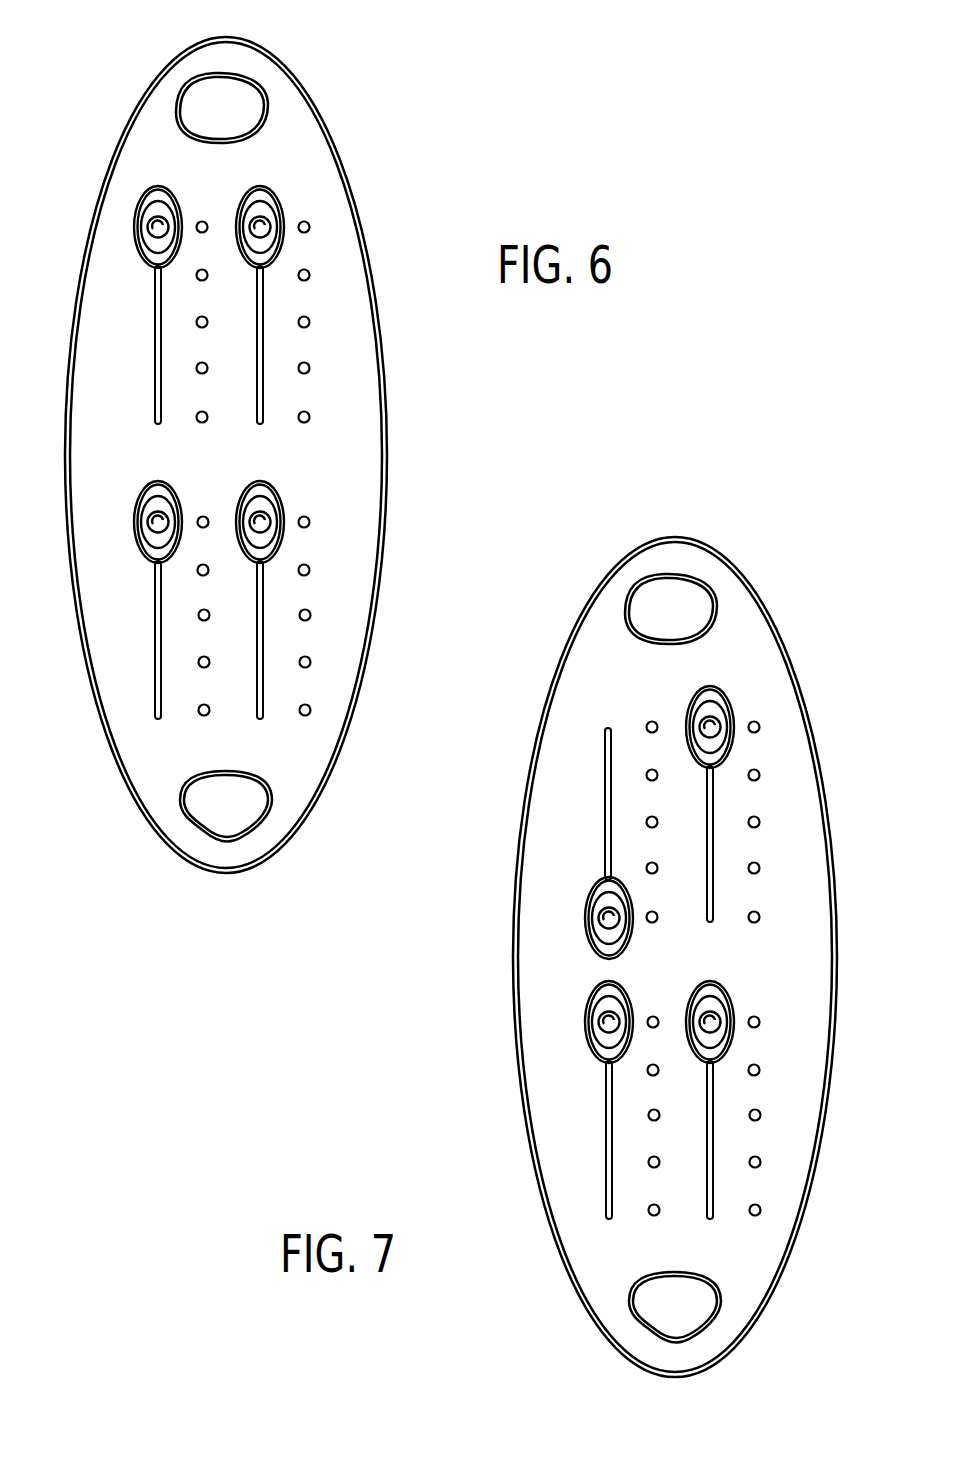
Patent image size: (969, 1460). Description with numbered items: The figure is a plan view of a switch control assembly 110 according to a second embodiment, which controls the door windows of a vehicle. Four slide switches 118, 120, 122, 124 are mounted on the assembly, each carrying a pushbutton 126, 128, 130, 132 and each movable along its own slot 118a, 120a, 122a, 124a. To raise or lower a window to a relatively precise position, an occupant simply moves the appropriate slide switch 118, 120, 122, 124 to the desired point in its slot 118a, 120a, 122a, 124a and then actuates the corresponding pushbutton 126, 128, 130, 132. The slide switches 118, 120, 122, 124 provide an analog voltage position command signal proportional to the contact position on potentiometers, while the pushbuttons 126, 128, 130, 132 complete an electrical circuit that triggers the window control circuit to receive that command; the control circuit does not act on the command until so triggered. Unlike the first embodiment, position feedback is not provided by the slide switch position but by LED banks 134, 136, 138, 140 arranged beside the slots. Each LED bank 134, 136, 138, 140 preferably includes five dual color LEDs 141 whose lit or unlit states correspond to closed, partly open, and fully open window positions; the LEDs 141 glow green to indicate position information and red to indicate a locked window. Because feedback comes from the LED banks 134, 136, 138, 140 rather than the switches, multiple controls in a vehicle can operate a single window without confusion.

In FIG. 6, the switch control assembly 110 is at (300, 56).
In FIG. 7, the switch control assembly 110 is at (750, 558).
In FIG. 6, the slide switch 118 is at (103, 243).
In FIG. 7, the slide switch 118 is at (549, 932).
In FIG. 6, the slot 118a is at (156, 347).
In FIG. 7, the slot 118a is at (606, 802).
In FIG. 6, the slide switch 120 is at (292, 214).
In FIG. 7, the slide switch 120 is at (744, 714).
In FIG. 6, the slot 120a is at (265, 385).
In FIG. 7, the slot 120a is at (715, 884).
In FIG. 6, the slide switch 122 is at (100, 551).
In FIG. 7, the slide switch 122 is at (550, 1052).
In FIG. 6, the slot 122a is at (158, 645).
In FIG. 7, the slot 122a is at (608, 1145).
In FIG. 6, the slide switch 124 is at (300, 525).
In FIG. 7, the slide switch 124 is at (751, 1027).
In FIG. 6, the slot 124a is at (265, 640).
In FIG. 7, the slot 124a is at (715, 1140).
In FIG. 6, the pushbutton 126 is at (158, 227).
In FIG. 7, the pushbutton 126 is at (594, 934).
In FIG. 6, the pushbutton 128 is at (260, 227).
In FIG. 7, the pushbutton 128 is at (710, 727).
In FIG. 6, the pushbutton 130 is at (158, 522).
In FIG. 7, the pushbutton 130 is at (609, 1022).
In FIG. 6, the pushbutton 132 is at (260, 522).
In FIG. 7, the pushbutton 132 is at (710, 1022).
In FIG. 6, the LED bank 134 is at (196, 430).
In FIG. 7, the LED bank 134 is at (657, 930).
In FIG. 6, the LED bank 136 is at (308, 430).
In FIG. 7, the LED bank 136 is at (758, 930).
In FIG. 6, the LED bank 138 is at (197, 728).
In FIG. 7, the LED bank 138 is at (647, 1230).
In FIG. 6, the LED bank 140 is at (298, 728).
In FIG. 7, the LED bank 140 is at (746, 1230).
In FIG. 6, the dual color LED 141 is at (202, 220).
In FIG. 7, the dual color LED 141 is at (652, 720).